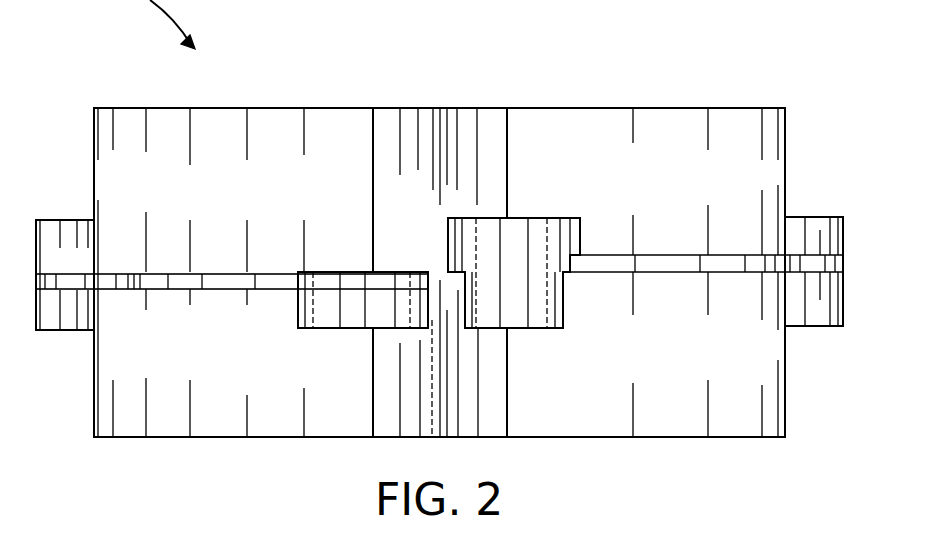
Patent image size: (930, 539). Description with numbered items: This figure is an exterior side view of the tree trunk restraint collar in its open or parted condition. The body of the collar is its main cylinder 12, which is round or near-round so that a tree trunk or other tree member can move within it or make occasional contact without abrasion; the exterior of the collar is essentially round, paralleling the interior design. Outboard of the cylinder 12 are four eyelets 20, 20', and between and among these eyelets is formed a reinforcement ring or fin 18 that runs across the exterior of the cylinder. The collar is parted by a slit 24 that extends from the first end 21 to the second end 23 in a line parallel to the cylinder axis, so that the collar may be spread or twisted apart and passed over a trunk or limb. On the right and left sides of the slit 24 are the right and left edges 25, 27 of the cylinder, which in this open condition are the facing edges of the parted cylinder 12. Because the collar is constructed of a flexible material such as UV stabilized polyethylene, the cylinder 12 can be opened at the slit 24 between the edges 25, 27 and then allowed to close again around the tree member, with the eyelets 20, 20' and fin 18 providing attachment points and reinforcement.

The main cylinder 12 is at (133, 116).
The reinforcement ring or fin 18 is at (141, 279).
The eyelets 20 is at (441, 300).
The eyelets 20' is at (439, 273).
The first end 21 is at (673, 112).
The second end 23 is at (722, 428).
The slit 24 is at (433, 118).
The right edge 25 is at (505, 403).
The left edge 27 is at (374, 398).